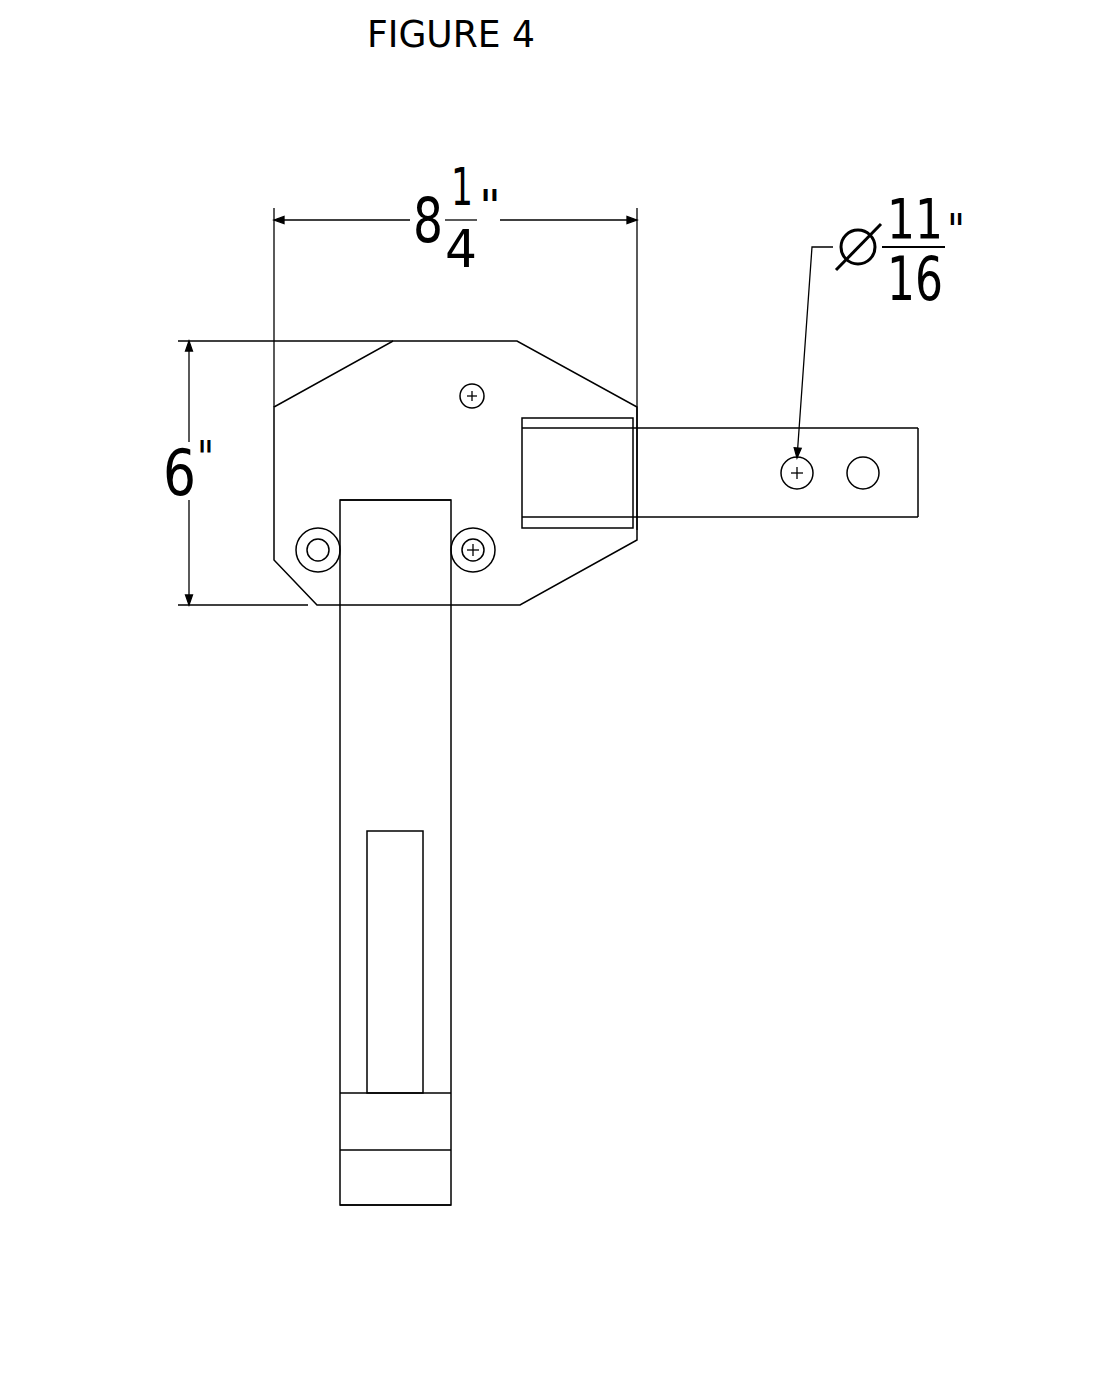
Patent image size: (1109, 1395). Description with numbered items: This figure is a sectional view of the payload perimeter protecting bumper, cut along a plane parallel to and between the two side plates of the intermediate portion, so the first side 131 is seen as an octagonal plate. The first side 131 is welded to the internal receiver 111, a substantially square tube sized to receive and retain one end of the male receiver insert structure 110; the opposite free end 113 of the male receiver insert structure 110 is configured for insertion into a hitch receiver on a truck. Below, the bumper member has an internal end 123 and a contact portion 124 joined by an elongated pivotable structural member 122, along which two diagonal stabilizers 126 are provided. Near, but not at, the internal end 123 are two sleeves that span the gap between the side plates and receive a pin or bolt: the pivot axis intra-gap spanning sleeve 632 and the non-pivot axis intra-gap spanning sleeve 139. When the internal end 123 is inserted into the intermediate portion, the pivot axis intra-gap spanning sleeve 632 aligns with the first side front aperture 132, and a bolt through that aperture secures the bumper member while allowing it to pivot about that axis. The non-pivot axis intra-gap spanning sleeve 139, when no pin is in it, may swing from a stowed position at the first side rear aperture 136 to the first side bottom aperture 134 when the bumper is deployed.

The male receiver insert structure 110 is at (702, 458).
The internal receiver 111 is at (600, 528).
The free end 113 is at (920, 463).
The elongated pivotable structural member 122 is at (377, 568).
The internal end 123 is at (393, 498).
The contact portion 124 is at (398, 1204).
The diagonal stabilizers 126 is at (398, 1004).
The first side 131 is at (362, 407).
The first side front aperture 132 is at (472, 550).
The first side bottom aperture 134 is at (510, 340).
The first side rear aperture 136 is at (315, 553).
The non-pivot axis intra-gap spanning sleeve 139 is at (313, 572).
The pivot axis intra-gap spanning sleeve 632 is at (552, 597).